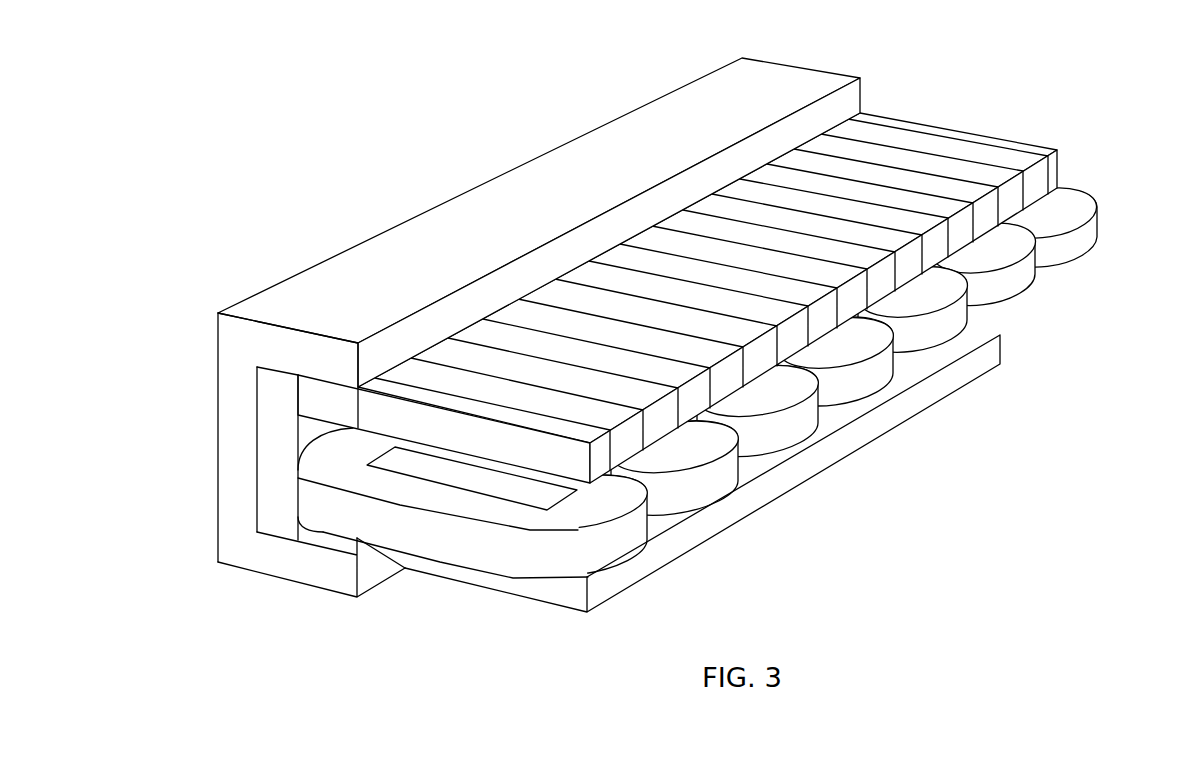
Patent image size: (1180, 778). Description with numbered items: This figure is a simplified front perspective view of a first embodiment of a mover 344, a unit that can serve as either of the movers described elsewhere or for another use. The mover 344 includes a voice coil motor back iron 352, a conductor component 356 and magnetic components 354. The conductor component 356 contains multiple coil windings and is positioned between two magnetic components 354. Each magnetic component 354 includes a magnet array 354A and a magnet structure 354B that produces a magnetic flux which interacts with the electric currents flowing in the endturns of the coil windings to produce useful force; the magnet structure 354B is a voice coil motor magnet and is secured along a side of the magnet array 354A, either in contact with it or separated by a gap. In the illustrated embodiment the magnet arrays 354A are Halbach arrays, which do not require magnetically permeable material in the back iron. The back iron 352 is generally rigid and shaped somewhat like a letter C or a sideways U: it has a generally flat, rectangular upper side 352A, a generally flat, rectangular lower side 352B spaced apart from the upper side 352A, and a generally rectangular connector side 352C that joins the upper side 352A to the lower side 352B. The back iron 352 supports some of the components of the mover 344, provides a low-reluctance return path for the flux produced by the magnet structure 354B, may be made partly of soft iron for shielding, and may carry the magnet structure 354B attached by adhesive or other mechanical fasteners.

The mover 344 is at (594, 362).
The VCM back iron 352 is at (453, 350).
The upper side 352A is at (258, 345).
The lower side 352B is at (273, 552).
The connector side 352C is at (243, 392).
The magnetic component 354 is at (572, 371).
The magnet array 354A is at (865, 140).
The magnet structure 354B is at (318, 535).
The conductor component 356 is at (1072, 221).